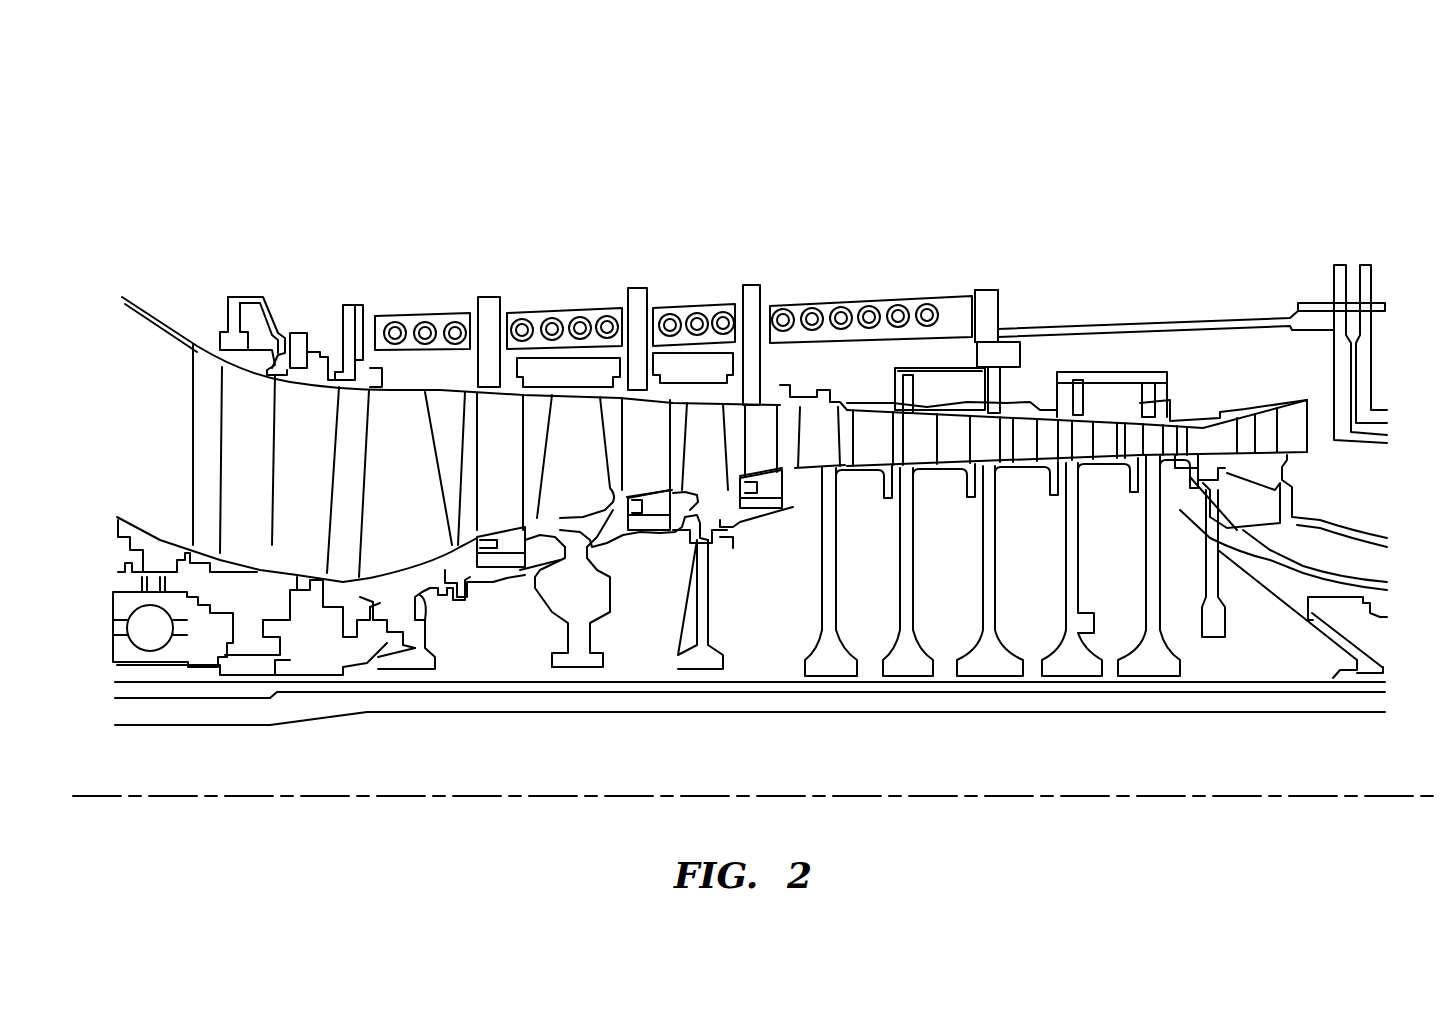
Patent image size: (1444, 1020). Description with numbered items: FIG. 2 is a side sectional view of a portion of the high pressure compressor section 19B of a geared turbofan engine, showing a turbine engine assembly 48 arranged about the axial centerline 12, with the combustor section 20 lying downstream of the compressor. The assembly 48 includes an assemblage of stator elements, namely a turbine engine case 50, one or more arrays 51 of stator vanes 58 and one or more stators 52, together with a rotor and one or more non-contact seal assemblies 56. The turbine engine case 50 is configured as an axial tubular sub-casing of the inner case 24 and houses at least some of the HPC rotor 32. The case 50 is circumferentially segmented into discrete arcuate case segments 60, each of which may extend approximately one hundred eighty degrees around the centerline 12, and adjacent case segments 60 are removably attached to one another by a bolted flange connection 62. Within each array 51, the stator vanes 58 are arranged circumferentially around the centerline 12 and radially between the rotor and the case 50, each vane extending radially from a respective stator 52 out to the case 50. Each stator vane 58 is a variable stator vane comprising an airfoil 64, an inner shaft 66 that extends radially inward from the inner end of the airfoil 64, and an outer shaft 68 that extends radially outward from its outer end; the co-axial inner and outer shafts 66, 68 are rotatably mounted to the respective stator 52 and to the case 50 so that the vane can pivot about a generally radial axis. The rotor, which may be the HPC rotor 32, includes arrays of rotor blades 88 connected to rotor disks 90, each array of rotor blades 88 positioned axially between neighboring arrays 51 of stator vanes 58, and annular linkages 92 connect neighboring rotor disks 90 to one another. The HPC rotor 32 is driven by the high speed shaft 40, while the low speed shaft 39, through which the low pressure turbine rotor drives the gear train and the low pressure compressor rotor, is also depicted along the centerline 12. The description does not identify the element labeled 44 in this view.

The axial centerline 12 is at (1218, 798).
The high pressure compressor (HPC) section 19B is at (744, 150).
The combustor section 20 is at (1340, 255).
The inner case 24 is at (880, 295).
The HPC rotor 32 is at (537, 658).
The low speed shaft 39 is at (1305, 705).
The high speed shaft 40 is at (1385, 610).
The high pressure turbine 44 is at (212, 462).
The turbine engine assembly 48 is at (1218, 95).
The turbine engine case 50 is at (945, 295).
The array of stator vanes 51 is at (488, 292).
The stator 52 is at (535, 555).
The non-contact seal assembly 56 is at (490, 568).
The stator vane 58 is at (513, 471).
The case segment 60 is at (986, 316).
The bolted flange connection 62 is at (805, 300).
The airfoil 64 is at (480, 422).
The inner shaft 66 is at (470, 545).
The outer shaft 68 is at (480, 325).
The rotor blades 88 is at (416, 501).
The rotor disk 90 is at (416, 672).
The annular linkage 92 is at (520, 580).